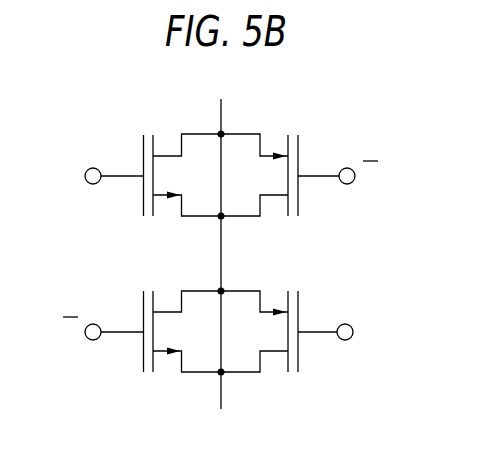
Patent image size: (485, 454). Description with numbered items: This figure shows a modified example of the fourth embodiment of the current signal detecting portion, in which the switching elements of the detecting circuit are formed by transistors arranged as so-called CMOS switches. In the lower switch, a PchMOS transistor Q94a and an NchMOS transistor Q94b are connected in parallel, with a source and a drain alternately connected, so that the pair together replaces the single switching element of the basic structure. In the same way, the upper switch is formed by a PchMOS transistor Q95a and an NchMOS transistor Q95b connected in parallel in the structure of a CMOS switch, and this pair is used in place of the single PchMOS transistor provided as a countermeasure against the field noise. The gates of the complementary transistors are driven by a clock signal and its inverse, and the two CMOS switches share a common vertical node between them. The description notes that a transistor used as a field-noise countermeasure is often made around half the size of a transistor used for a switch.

The NchMOS transistor Q95b is at (139, 157).
The PchMOS transistor Q95a is at (302, 156).
The NchMOS transistor Q94b is at (139, 312).
The PchMOS transistor Q94a is at (302, 312).